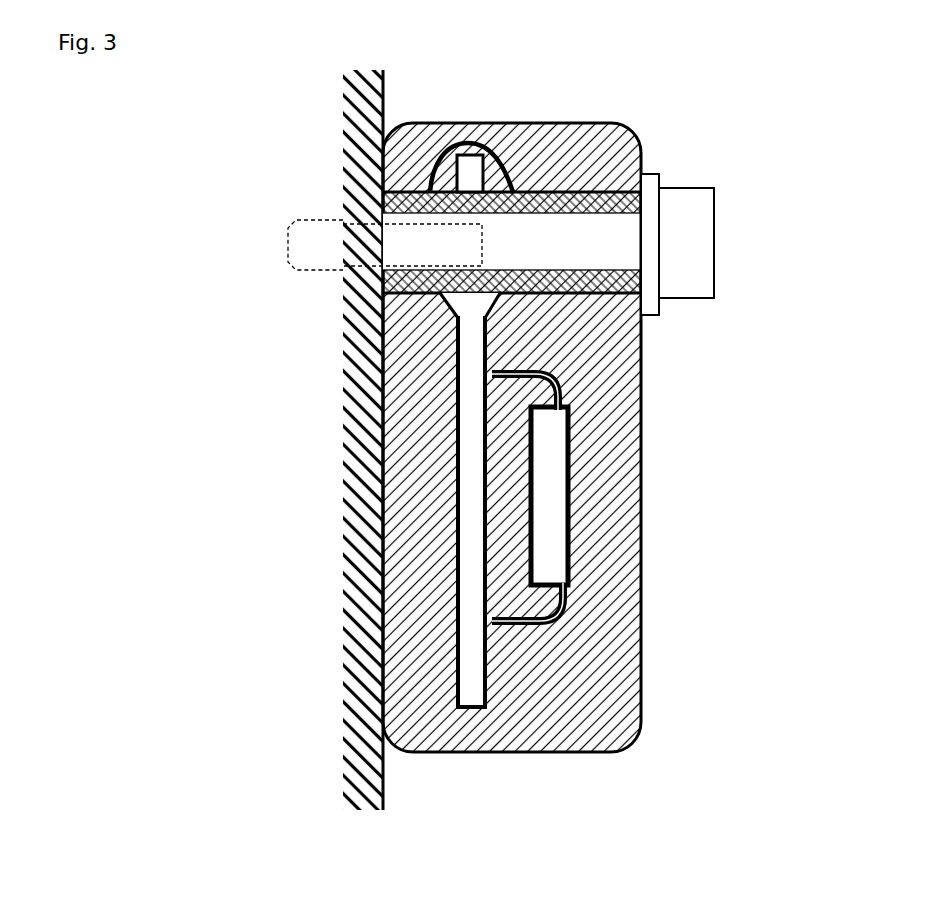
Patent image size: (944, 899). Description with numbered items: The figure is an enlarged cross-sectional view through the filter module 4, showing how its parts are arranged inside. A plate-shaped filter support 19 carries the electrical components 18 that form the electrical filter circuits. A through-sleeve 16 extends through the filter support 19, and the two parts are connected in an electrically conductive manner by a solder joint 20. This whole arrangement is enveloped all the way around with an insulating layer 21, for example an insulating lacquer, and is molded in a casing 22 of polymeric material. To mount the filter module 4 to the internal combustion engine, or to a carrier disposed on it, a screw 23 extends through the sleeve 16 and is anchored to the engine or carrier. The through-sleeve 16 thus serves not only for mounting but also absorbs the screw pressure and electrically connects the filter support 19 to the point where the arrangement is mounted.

The filter module 4 is at (566, 416).
The through-sleeve 16 is at (639, 148).
The electrical components 18 is at (555, 499).
The filter support 19 is at (476, 679).
The solder joint 20 is at (430, 124).
The insulating layer 21 is at (477, 122).
The casing 22 is at (577, 392).
The screw 23 is at (697, 228).